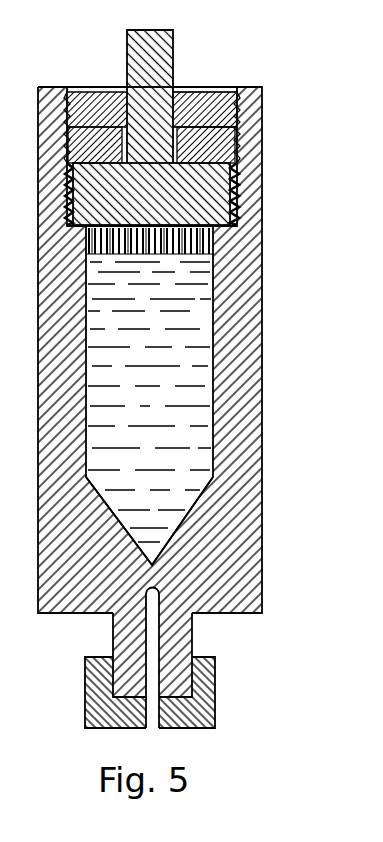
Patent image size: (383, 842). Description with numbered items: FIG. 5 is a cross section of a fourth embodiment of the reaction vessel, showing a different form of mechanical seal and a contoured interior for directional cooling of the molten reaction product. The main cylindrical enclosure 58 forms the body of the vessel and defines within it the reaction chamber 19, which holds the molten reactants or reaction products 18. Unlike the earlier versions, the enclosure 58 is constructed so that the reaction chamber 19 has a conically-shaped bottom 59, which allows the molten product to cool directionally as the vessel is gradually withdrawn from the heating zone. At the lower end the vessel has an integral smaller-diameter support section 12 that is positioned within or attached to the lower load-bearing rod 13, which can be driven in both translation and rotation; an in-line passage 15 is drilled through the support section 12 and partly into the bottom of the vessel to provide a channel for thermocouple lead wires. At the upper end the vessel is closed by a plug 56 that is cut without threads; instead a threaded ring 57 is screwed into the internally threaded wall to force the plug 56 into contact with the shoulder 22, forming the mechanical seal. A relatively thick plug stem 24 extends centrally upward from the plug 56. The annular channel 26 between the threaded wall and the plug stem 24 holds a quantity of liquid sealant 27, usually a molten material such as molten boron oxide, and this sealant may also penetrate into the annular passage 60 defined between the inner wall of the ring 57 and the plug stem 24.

The support section 12 is at (175, 663).
The lower load-bearing rod 13 is at (198, 707).
The in-line passage 15 is at (155, 637).
The molten reactants or reaction products 18 is at (197, 322).
The reaction chamber 19 is at (185, 245).
The shoulder 22 is at (217, 228).
The plug stem 24 is at (157, 55).
The annular channel 26 is at (208, 90).
The liquid sealant 27 is at (222, 117).
The plug 56 is at (208, 197).
The threaded ring 57 is at (237, 143).
The main cylindrical enclosure 58 is at (242, 390).
The conically-shaped bottom 59 is at (182, 500).
The annular passage 60 is at (231, 213).